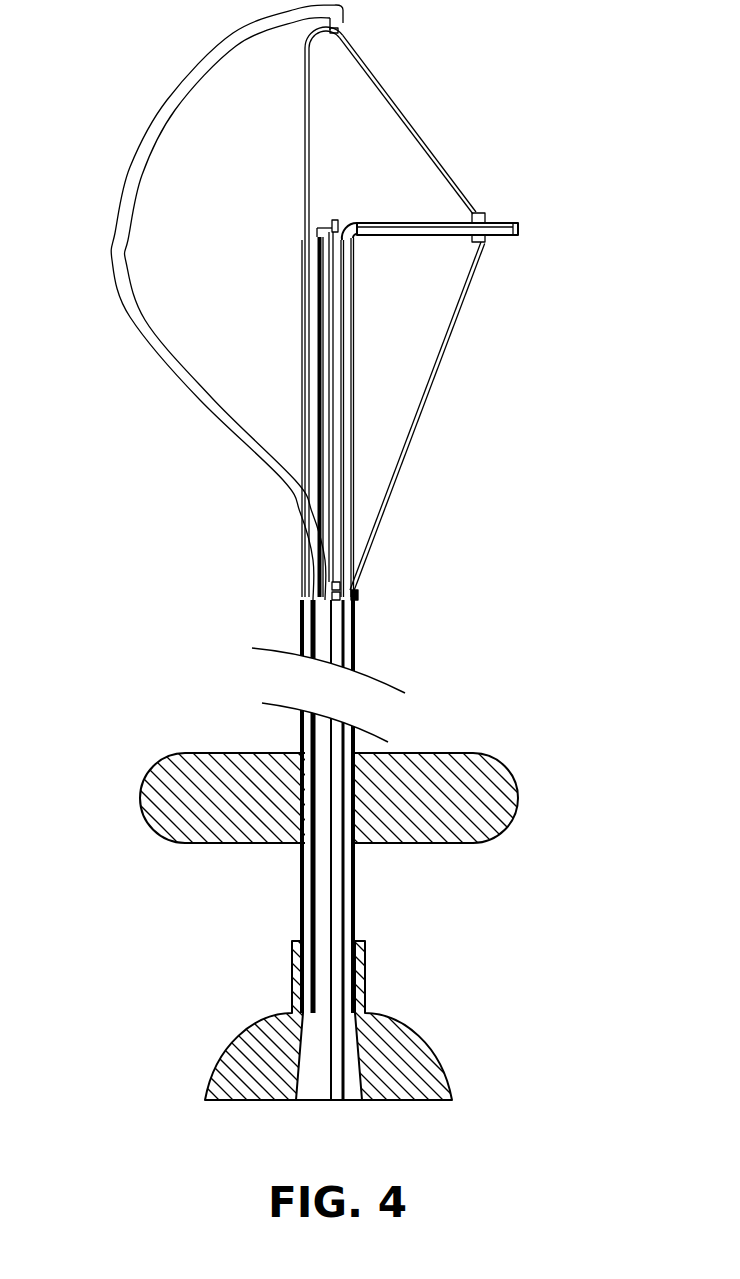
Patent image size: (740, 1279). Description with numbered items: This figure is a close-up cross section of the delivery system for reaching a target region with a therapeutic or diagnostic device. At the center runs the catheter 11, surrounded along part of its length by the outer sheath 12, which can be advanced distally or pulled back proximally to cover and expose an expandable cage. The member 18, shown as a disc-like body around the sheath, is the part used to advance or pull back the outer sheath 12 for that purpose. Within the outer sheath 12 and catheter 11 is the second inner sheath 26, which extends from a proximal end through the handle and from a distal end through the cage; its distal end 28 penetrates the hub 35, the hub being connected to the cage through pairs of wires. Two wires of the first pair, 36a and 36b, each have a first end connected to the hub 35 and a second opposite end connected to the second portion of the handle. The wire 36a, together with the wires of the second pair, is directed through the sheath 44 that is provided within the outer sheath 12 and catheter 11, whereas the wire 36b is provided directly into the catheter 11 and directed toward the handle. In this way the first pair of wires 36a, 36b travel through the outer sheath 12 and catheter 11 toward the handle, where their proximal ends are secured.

The catheter 11 is at (298, 590).
The outer sheath 12 is at (298, 600).
The member 18 is at (140, 775).
The second inner sheath 26 is at (353, 535).
The distal end 28 is at (513, 228).
The hub 35 is at (482, 242).
The first wire of first pair 36a is at (422, 126).
The second wire of first pair 36b is at (393, 480).
The sheath 44 is at (301, 338).